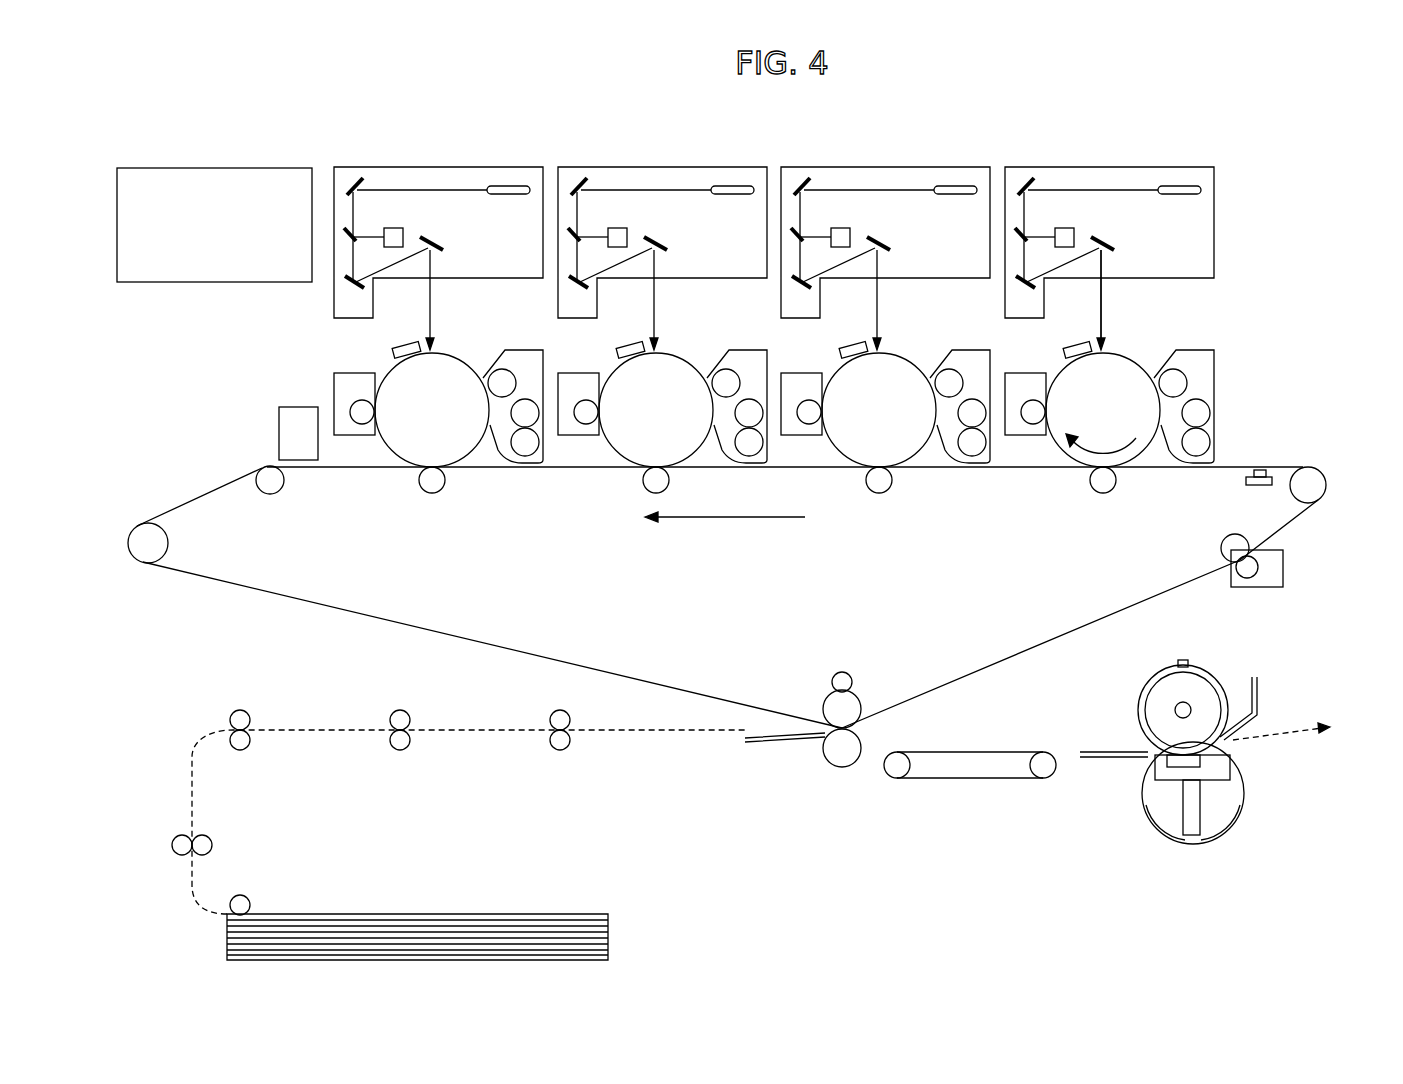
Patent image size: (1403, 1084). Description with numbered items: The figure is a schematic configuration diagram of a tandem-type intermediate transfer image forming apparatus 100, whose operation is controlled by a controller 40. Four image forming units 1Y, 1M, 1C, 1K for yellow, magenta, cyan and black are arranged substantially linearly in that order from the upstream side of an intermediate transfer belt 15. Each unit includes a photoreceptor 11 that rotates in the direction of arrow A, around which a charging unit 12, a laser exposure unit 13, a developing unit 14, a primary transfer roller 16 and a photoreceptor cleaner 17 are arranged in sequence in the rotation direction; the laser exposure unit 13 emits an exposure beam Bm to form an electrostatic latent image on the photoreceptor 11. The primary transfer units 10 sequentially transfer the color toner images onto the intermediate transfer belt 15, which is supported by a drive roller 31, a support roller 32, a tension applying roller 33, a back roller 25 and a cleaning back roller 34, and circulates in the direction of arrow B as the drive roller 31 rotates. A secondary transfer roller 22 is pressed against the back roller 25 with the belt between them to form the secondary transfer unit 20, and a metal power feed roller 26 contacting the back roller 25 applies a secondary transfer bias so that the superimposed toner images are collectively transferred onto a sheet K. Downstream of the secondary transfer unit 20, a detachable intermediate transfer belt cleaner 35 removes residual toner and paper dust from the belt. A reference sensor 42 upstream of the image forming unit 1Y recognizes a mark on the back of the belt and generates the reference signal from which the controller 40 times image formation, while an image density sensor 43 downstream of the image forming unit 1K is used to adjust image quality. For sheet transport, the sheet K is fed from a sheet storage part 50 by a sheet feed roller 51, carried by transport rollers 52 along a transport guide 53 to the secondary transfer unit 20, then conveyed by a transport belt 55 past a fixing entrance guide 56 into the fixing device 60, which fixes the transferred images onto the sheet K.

The image forming apparatus 100 is at (1303, 178).
The controller 40 is at (216, 167).
The image forming unit 1K is at (432, 158).
The image forming unit 1C is at (662, 293).
The image forming unit 1M is at (885, 293).
The image forming unit 1Y is at (1128, 329).
The laser exposure unit 13 is at (1148, 258).
The charging unit 12 is at (1028, 327).
The photoreceptor 11 is at (1135, 381).
The photoreceptor cleaner 17 is at (1024, 453).
The developing unit 14 is at (1221, 406).
The primary transfer roller 16 is at (1098, 516).
The exposure beam Bm is at (1144, 295).
The arrow A is at (1101, 419).
The image density sensor 43 is at (279, 424).
The intermediate transfer belt 15 is at (617, 678).
The tension applying roller 33 is at (169, 549).
The support roller 32 is at (280, 494).
The drive roller 31 is at (1318, 487).
The reference sensor 42 is at (1263, 487).
The cleaning back roller 34 is at (1223, 543).
The intermediate transfer belt cleaner 35 is at (1284, 575).
The arrow B is at (725, 533).
The primary transfer unit 10 is at (1069, 470).
The back roller 25 is at (857, 695).
The power feed roller 26 is at (836, 672).
The secondary transfer roller 22 is at (836, 770).
The secondary transfer unit 20 is at (864, 731).
The transport guide 53 is at (760, 745).
The transport belt 55 is at (976, 780).
The fixing entrance guide 56 is at (1110, 758).
The fixing device 60 is at (1277, 705).
The transport rollers 52 is at (190, 833).
The sheet K is at (425, 913).
The sheet feed roller 51 is at (247, 896).
The sheet storage part 50 is at (609, 936).